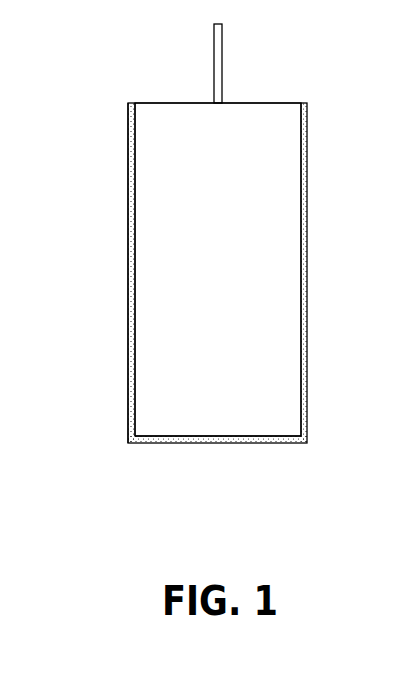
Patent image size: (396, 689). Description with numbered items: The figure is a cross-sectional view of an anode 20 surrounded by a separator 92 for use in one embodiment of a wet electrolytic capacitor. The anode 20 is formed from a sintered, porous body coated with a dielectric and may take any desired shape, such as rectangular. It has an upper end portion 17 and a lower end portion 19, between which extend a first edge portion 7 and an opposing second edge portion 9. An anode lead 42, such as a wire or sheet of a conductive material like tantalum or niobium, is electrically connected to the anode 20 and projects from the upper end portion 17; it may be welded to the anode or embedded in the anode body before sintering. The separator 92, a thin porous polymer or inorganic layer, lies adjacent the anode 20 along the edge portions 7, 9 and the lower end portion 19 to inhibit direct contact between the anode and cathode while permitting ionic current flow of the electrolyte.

The upper end portion 17 is at (268, 102).
The first edge portion 7 is at (133, 172).
The separator 92 is at (128, 240).
The second edge portion 9 is at (301, 225).
The lower end portion 19 is at (147, 437).
The anode lead 42 is at (218, 43).
The anode 20 is at (224, 321).